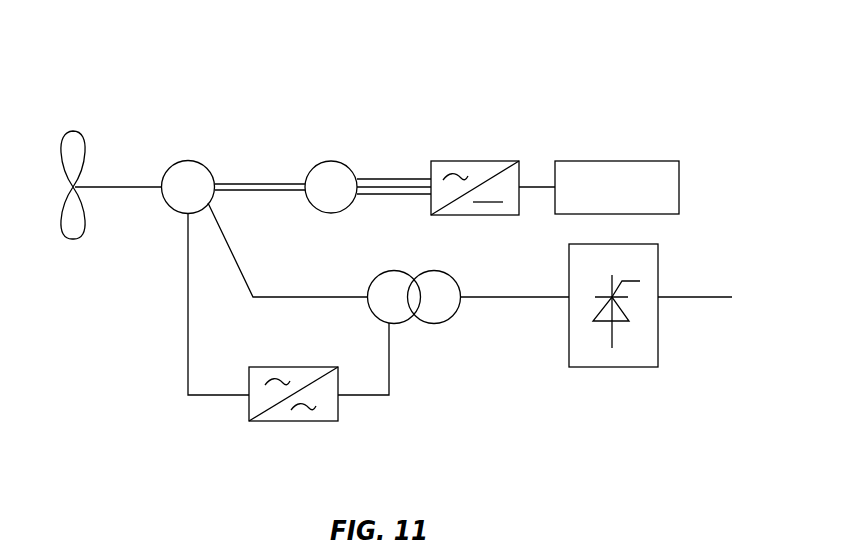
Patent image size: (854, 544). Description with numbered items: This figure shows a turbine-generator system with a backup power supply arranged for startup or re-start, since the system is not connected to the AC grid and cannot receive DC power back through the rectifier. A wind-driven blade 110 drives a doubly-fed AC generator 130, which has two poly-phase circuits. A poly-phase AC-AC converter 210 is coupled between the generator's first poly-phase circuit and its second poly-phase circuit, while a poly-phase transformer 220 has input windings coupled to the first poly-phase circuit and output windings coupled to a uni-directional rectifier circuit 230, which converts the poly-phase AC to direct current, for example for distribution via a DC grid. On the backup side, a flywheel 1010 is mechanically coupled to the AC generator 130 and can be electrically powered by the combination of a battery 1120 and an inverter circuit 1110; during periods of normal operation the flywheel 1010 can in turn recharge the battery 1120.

The wind-driven blade 110 is at (82, 235).
The doubly-fed AC generator 130 is at (192, 160).
The flywheel 1010 is at (335, 161).
The inverter circuit 1110 is at (470, 161).
The battery 1120 is at (592, 161).
The poly-phase AC-AC converter 210 is at (338, 410).
The poly-phase transformer 220 is at (440, 322).
The uni-directional rectifier circuit 230 is at (602, 367).